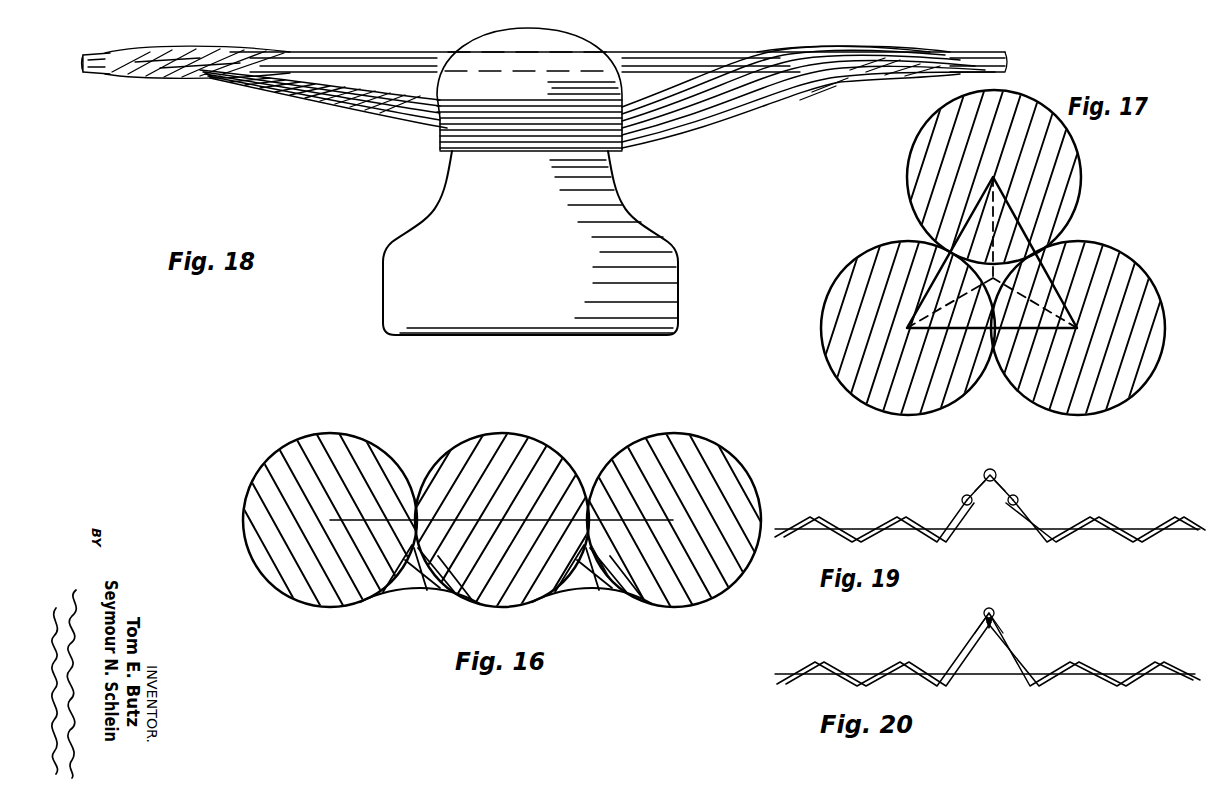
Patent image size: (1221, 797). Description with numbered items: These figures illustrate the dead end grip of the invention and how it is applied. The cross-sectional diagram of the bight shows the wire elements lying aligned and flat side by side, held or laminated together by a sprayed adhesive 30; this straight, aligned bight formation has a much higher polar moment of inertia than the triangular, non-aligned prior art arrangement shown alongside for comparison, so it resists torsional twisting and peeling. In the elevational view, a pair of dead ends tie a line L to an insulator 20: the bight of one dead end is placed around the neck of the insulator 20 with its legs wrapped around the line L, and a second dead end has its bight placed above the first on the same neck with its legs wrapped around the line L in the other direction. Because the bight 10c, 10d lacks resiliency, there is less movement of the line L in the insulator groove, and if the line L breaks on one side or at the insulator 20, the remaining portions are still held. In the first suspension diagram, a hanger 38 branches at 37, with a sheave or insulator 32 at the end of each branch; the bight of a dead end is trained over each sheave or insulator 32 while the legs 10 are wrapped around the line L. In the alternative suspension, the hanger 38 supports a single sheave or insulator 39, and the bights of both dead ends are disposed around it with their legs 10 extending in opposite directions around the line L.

In FIG. 18, the line L is at (376, 56).
In FIG. 19, the line L is at (984, 532).
In FIG. 20, the line L is at (984, 677).
In FIG. 16, the legs 10 is at (341, 604).
In FIG. 19, the legs 10 is at (895, 517).
In FIG. 20, the legs 10 is at (905, 661).
In FIG. 18, the bight portion 10c is at (447, 136).
In FIG. 19, the bight portion 10c is at (1004, 508).
In FIG. 20, the bight portion 10c is at (985, 610).
In FIG. 18, the bight portion 10d is at (533, 152).
In FIG. 18, the insulator 20 is at (670, 251).
In FIG. 16, the adhesive 30 is at (427, 597).
In FIG. 19, the sheave or insulator 32 is at (960, 498).
In FIG. 19, the branch point of hanger 37 is at (976, 485).
In FIG. 19, the hanger 38 is at (990, 445).
In FIG. 20, the hanger 38 is at (989, 585).
In FIG. 20, the single sheave or insulator 39 is at (996, 614).